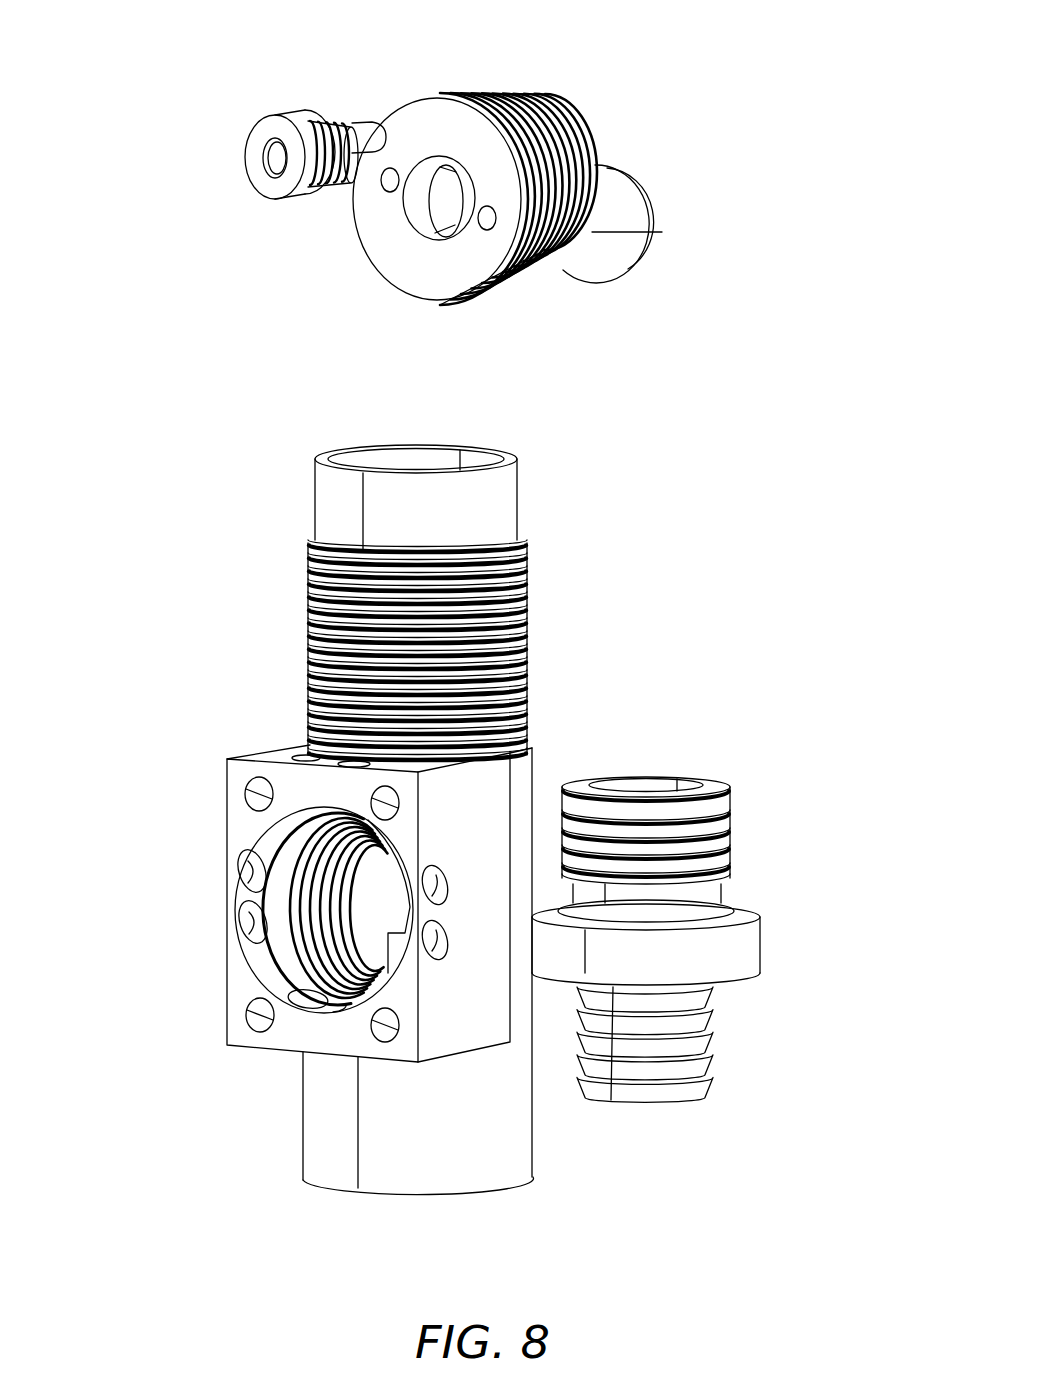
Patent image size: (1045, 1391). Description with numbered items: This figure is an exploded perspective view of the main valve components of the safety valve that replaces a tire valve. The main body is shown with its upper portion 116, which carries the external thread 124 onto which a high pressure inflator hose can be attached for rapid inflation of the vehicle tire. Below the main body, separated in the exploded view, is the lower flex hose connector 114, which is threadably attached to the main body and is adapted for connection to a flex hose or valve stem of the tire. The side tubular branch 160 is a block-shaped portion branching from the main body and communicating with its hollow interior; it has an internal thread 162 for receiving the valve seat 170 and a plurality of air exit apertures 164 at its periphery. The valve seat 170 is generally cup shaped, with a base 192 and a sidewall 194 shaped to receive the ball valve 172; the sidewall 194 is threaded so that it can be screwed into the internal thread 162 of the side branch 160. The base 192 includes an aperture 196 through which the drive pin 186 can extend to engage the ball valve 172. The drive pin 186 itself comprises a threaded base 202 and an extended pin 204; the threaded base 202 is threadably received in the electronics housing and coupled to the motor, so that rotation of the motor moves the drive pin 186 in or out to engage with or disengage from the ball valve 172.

The lower flex hose connector 114 is at (752, 952).
The upper portion 116 is at (338, 507).
The external thread 124 is at (528, 613).
The side tubular branch 160 is at (230, 950).
The internal thread 162 is at (297, 890).
The air exit apertures 164 is at (306, 758).
The valve seat 170 is at (407, 118).
The ball valve 172 is at (622, 258).
The drive pin 186 is at (232, 232).
The base 192 is at (457, 270).
The sidewall 194 is at (532, 90).
The aperture 196 is at (460, 207).
The threaded base 202 is at (245, 148).
The extended pin 204 is at (368, 122).